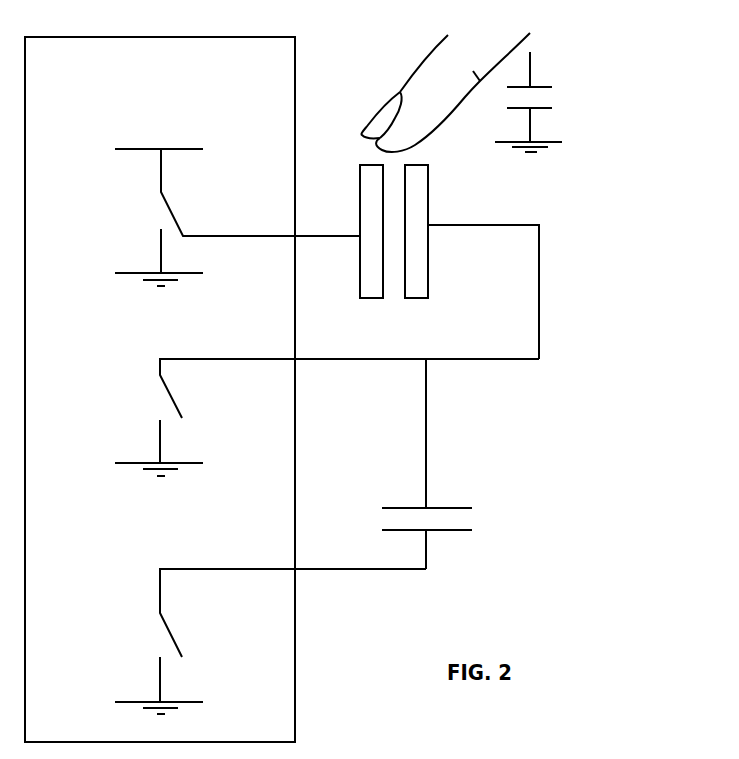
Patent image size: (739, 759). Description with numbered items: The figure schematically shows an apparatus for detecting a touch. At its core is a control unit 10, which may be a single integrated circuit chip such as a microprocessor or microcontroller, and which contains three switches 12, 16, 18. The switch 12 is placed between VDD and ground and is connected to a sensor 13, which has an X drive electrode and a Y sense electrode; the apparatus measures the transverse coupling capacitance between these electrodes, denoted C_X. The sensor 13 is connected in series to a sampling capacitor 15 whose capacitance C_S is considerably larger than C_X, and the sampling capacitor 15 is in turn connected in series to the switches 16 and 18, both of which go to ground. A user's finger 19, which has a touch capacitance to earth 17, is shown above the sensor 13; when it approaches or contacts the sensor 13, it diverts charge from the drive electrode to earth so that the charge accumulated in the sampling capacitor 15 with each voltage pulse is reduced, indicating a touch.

The control unit 10 is at (160, 389).
The switch 12 is at (237, 212).
The sensor 13 is at (433, 218).
The sampling capacitor 15 is at (433, 497).
The switch 16 is at (327, 399).
The capacitance Ct of user to earth 17 is at (540, 75).
The switch 18 is at (270, 624).
The finger 19 is at (405, 68).